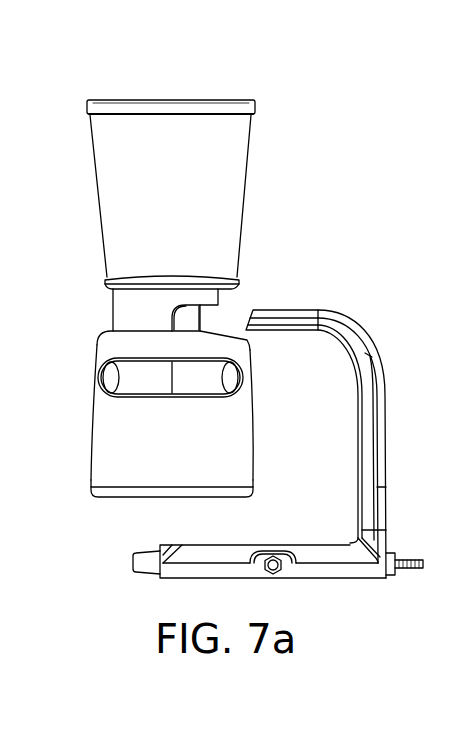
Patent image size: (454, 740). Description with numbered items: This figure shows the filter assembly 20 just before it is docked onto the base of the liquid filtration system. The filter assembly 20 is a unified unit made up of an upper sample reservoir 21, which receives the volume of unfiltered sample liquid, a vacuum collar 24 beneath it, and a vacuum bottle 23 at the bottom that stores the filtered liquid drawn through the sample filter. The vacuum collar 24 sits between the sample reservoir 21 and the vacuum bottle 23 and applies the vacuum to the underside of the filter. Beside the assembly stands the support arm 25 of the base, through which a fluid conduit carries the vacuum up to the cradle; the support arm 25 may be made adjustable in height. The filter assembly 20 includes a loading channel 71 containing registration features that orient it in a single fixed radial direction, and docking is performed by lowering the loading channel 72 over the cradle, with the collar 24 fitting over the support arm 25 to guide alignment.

The filter assembly 20 is at (227, 84).
The sample reservoir 21 is at (249, 182).
The vacuum bottle 23 is at (92, 420).
The vacuum collar 24 is at (113, 311).
The support arm 25 is at (348, 318).
The loading channel 71 is at (202, 321).
The loading channel 72 is at (304, 309).